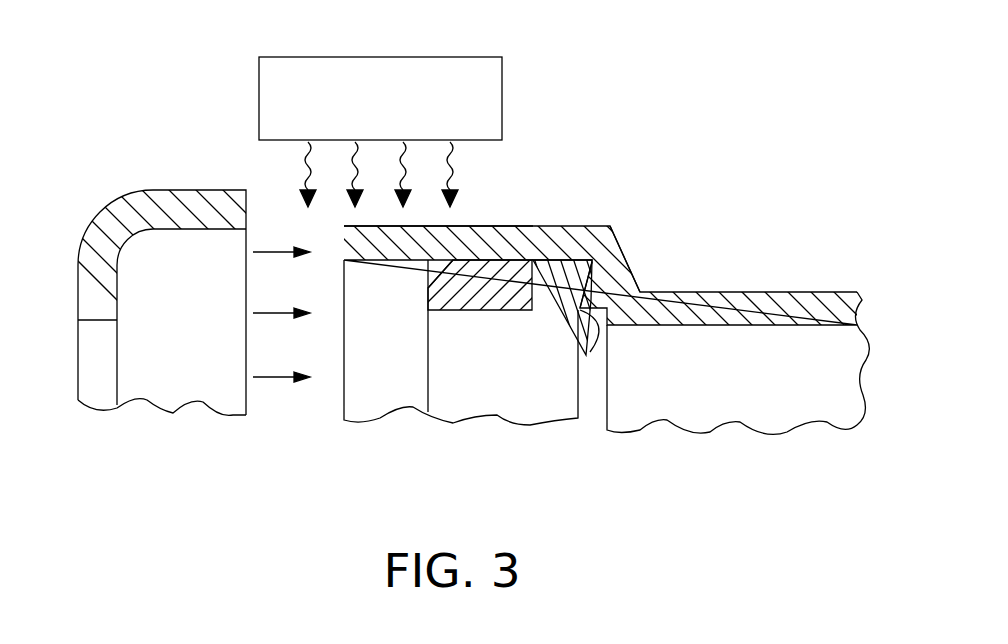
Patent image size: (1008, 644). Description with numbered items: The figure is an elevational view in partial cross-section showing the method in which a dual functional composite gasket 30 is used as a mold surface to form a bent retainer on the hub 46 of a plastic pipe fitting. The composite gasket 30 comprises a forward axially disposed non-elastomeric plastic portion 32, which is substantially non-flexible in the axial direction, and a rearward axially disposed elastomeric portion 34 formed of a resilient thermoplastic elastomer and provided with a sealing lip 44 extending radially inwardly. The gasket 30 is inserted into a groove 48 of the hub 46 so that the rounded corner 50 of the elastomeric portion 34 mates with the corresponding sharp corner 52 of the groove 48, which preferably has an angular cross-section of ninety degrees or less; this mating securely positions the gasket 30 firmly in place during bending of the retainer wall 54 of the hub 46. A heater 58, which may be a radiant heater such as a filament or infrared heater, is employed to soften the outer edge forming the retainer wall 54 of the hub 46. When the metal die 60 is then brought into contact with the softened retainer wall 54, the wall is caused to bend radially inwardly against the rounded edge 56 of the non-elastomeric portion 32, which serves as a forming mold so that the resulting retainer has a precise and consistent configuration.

The composite gasket 30 is at (518, 266).
The non-elastomeric plastic portion 32 is at (470, 300).
The elastomeric portion 34 is at (570, 340).
The sealing lip 44 is at (598, 343).
The hub 46 is at (575, 226).
The groove 48 is at (486, 398).
The rounded corner 50 is at (597, 262).
The sharp corner 52 is at (596, 252).
The retainer wall 54 is at (375, 262).
The rounded edge 56 is at (445, 266).
The heater 58 is at (390, 113).
The metal die 60 is at (163, 352).